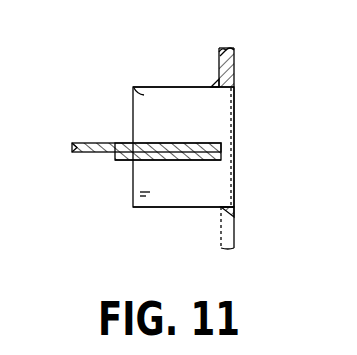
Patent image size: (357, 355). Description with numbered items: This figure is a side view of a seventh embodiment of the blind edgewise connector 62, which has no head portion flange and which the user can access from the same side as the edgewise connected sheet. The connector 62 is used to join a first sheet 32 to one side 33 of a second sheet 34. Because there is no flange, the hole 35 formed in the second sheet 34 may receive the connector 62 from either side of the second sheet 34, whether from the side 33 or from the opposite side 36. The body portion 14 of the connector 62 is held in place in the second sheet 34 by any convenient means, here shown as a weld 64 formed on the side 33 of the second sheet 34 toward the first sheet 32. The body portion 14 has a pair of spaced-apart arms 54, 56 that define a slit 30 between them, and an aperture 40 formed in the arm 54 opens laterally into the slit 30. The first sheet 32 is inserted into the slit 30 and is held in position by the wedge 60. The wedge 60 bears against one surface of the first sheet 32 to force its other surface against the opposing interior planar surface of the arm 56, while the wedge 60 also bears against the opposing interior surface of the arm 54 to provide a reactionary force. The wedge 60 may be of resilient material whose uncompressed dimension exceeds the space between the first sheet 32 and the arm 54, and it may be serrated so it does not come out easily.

The body portion 14 is at (133, 191).
The slit 30 is at (131, 143).
The first sheet 32 is at (80, 152).
The one side of the second sheet 33 is at (222, 55).
The second sheet 34 is at (232, 55).
The hole 35 is at (236, 95).
The opposite side of the second sheet 36 is at (237, 73).
The aperture 40 is at (221, 151).
The arm 54 is at (178, 194).
The arm 56 is at (134, 87).
The wedge 60 is at (130, 161).
The blind edgewise connector 62 is at (68, 211).
The weld 64 is at (215, 83).